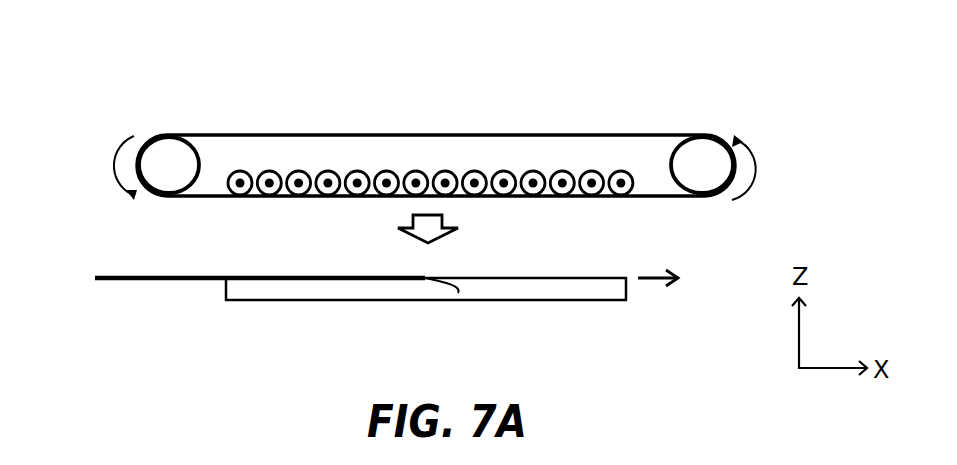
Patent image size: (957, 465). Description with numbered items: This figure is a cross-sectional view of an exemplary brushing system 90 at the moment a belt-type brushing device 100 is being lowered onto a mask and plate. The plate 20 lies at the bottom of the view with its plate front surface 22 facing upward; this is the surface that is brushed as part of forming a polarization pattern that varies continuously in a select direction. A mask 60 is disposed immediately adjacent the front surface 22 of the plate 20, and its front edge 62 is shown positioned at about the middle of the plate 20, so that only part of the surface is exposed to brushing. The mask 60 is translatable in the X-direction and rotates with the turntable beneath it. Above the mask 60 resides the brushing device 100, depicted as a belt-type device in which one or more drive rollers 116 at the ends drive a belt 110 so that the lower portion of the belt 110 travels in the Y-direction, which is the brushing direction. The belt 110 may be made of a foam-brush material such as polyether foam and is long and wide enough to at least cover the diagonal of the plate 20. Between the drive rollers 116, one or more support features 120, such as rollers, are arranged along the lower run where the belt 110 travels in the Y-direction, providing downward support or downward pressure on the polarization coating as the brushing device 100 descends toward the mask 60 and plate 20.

The brushing system 90 is at (722, 56).
The brushing device 100 is at (209, 72).
The belt 110 is at (578, 133).
The drive rollers 116 is at (168, 148).
The support features 120 is at (385, 170).
The mask 60 is at (126, 261).
The plate 20 is at (226, 298).
The plate front surface 22 is at (535, 279).
The front edge 62 is at (458, 293).